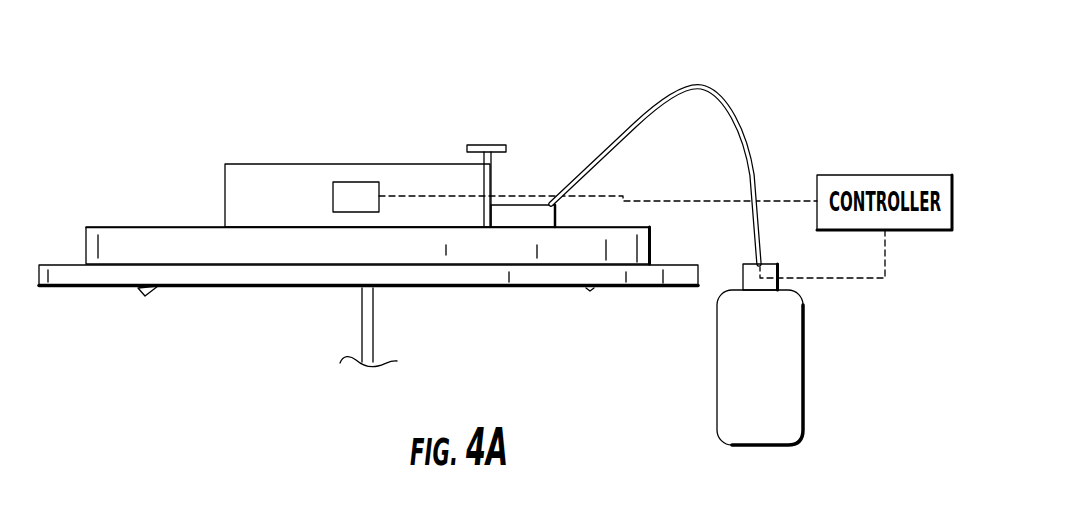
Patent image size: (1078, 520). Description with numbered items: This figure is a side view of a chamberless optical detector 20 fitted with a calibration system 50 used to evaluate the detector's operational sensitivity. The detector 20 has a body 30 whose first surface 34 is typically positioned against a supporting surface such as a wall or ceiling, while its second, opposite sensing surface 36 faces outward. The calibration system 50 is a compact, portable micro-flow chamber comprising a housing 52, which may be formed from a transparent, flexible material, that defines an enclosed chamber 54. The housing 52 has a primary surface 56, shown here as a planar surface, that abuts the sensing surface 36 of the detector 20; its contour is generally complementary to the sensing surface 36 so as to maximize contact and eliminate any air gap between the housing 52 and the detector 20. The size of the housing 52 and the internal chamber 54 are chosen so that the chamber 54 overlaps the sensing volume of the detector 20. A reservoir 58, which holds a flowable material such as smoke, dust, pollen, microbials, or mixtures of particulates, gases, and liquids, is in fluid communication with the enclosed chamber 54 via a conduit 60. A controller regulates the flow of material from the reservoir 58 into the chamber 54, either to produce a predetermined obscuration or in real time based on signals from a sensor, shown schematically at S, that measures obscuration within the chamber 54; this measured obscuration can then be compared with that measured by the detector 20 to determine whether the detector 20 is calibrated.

The optical detector 20 is at (154, 76).
The body 30 is at (290, 247).
The first surface 34 is at (492, 290).
The second surface 36 is at (162, 226).
The calibration system 50 is at (598, 102).
The housing 52 is at (355, 163).
The enclosed chamber 54 is at (440, 195).
The primary surface 56 is at (393, 228).
The reservoir 58 is at (760, 354).
The conduit 60 is at (737, 102).